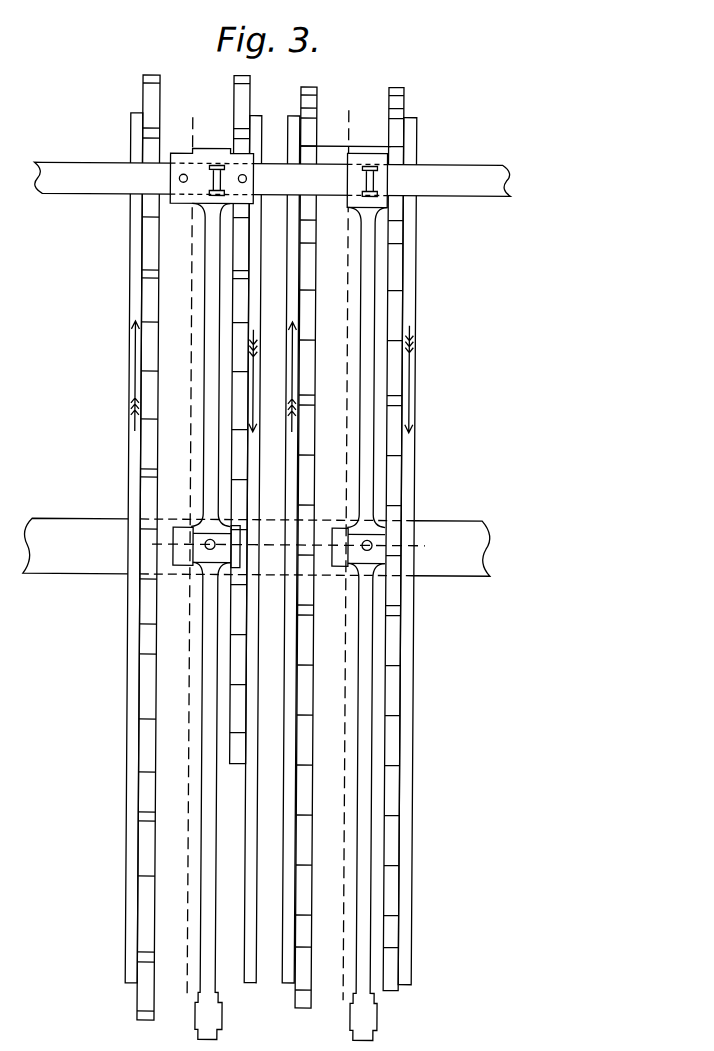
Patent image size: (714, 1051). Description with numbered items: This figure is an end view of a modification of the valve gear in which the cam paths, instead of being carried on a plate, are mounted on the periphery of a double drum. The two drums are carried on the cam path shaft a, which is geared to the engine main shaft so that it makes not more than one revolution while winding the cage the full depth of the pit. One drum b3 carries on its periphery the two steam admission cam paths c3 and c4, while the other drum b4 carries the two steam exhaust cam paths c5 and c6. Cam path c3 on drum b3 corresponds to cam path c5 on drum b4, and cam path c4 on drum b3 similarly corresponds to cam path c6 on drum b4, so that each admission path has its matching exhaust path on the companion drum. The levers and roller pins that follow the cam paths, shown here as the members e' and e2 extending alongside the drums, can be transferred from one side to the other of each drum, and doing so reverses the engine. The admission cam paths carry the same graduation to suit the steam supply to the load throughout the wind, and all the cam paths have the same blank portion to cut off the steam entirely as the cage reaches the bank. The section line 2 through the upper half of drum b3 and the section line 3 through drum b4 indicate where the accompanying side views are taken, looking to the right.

The cam path shaft a is at (256, 547).
The drum b3 is at (405, 806).
The drum b4 is at (128, 850).
The cam path c3 is at (309, 772).
The cam path c4 is at (399, 663).
The cam path c5 is at (148, 680).
The cam path c6 is at (240, 765).
The connecting rod e' is at (354, 596).
The connecting rod e2 is at (213, 723).
The section line 2— 2 is at (343, 560).
The section line 3— 3 is at (186, 560).